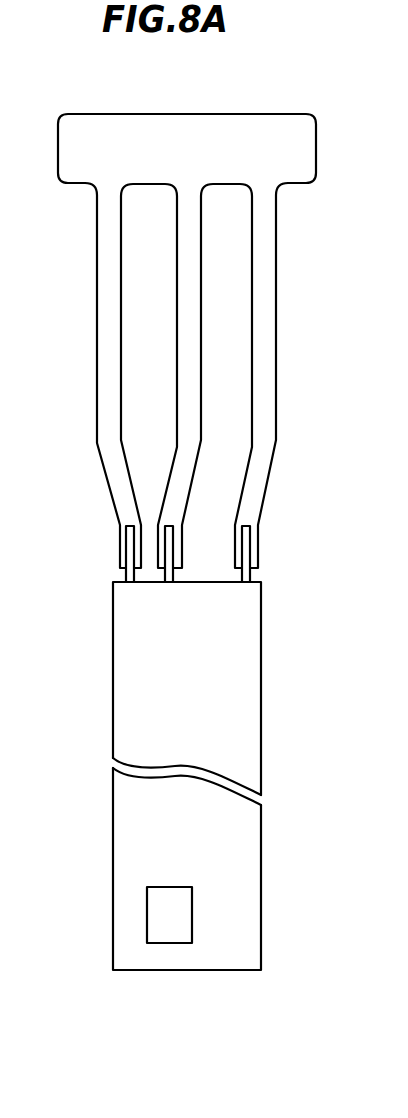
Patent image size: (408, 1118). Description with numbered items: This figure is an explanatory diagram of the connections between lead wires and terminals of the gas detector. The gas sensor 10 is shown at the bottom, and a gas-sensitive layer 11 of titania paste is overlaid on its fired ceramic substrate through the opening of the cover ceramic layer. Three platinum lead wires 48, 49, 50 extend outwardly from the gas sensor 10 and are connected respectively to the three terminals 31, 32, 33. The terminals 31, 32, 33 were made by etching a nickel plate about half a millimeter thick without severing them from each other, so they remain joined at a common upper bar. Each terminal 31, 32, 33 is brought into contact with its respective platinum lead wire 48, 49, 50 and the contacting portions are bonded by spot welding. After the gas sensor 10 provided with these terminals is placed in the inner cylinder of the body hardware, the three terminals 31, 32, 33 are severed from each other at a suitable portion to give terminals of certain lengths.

The gas sensor 10 is at (120, 651).
The gas-sensitive layer 11 is at (152, 902).
The terminal 31 is at (103, 474).
The terminal 32 is at (195, 468).
The terminal 33 is at (270, 470).
The platinum lead wire 48 is at (130, 552).
The platinum lead wire 49 is at (173, 549).
The platinum lead wire 50 is at (248, 549).